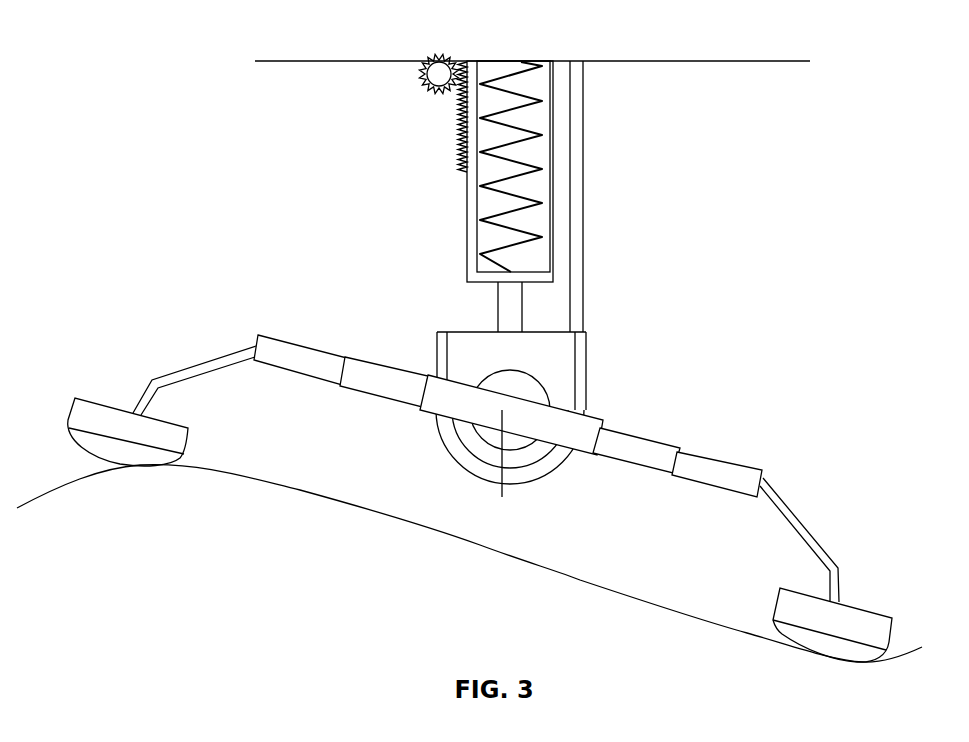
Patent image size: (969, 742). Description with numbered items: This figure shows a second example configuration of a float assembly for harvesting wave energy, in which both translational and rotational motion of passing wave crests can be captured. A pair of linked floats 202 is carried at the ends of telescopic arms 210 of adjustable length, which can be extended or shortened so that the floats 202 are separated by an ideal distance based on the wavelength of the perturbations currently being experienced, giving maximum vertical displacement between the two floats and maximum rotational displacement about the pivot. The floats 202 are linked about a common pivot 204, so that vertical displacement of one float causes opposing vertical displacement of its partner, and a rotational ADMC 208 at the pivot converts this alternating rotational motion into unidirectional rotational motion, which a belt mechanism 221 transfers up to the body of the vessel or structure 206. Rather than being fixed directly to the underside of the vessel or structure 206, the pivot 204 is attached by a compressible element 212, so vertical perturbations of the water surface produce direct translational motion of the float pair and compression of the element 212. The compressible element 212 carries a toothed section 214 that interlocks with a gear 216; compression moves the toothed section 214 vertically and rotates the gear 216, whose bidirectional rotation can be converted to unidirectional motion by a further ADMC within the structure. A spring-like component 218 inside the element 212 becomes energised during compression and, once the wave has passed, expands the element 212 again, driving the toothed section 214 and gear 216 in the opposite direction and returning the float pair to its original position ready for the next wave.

The float 202 is at (147, 465).
The common pivot 204 is at (502, 410).
The vessel or structure 206 is at (319, 42).
The rotational ADMC 208 is at (497, 357).
The telescopic arms 210 is at (663, 443).
The compressible element 212 is at (467, 265).
The toothed section 214 is at (460, 127).
The gear 216 is at (421, 82).
The spring-like component 218 is at (481, 196).
The belt mechanism 221 is at (580, 207).